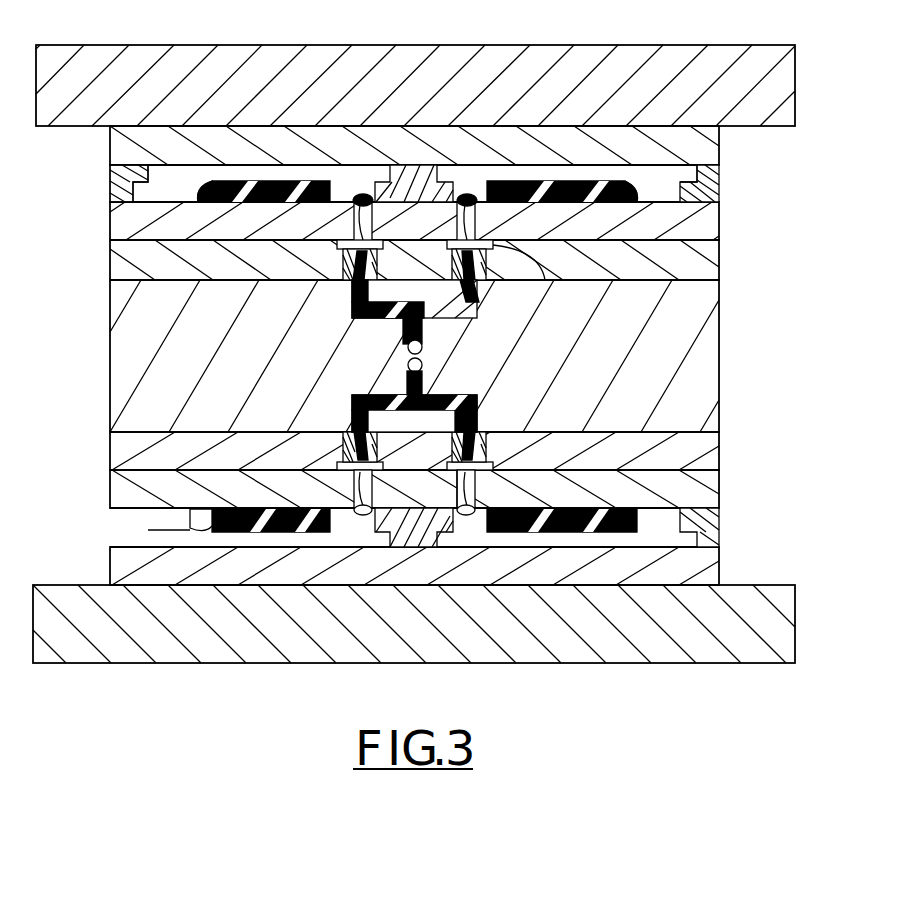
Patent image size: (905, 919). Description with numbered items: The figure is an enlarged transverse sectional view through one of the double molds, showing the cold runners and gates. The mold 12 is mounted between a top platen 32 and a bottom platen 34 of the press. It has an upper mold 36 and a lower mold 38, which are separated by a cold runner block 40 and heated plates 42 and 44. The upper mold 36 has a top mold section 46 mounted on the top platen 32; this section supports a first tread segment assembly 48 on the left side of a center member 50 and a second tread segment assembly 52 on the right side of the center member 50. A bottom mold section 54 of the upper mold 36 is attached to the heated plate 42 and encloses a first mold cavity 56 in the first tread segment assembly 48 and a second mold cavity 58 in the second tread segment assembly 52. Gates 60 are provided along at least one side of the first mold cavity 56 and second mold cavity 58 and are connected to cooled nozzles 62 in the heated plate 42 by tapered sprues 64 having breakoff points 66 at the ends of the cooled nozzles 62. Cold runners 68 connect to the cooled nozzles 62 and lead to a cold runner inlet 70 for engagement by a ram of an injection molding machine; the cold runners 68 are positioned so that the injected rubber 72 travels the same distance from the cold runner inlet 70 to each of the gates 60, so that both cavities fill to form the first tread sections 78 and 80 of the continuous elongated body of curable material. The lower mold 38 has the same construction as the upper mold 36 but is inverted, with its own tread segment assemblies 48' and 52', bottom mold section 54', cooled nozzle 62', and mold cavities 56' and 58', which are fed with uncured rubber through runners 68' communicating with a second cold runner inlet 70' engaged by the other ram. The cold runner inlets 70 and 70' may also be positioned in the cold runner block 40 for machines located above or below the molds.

The mold 12 is at (719, 147).
The top platen 32 is at (758, 70).
The bottom platen 34 is at (763, 597).
The upper mold 36 is at (720, 173).
The lower mold 38 is at (713, 482).
The cold runner block 40 is at (713, 335).
The heated plate 42 is at (710, 272).
The heated plate 44 is at (703, 443).
The top mold section 46 is at (113, 147).
The first tread segment assembly 48 is at (99, 180).
The tread segment assembly 48' is at (149, 615).
The center member 50 is at (421, 173).
The second tread segment assembly 52 is at (721, 184).
The tread segment assembly 52' is at (582, 608).
The bottom mold section 54 is at (441, 227).
The bottom mold section 54' is at (449, 523).
The first mold cavity 56 is at (193, 199).
The mold cavity 56' is at (189, 518).
The second mold cavity 58 is at (562, 103).
The mold cavity 58' is at (728, 520).
The gates 60 is at (367, 199).
The cooled nozzles 62 is at (416, 383).
The cooled nozzle 62' is at (527, 445).
The tapered sprues 64 is at (340, 245).
The breakoff points 66 is at (355, 215).
The cold runners 68 is at (427, 319).
The runners 68' is at (447, 399).
The cold runner inlet 70 is at (384, 338).
The cold runner inlet 70' is at (376, 376).
The injected rubber 72 is at (627, 202).
The first tread section 78 is at (212, 184).
The first tread section 80 is at (613, 180).